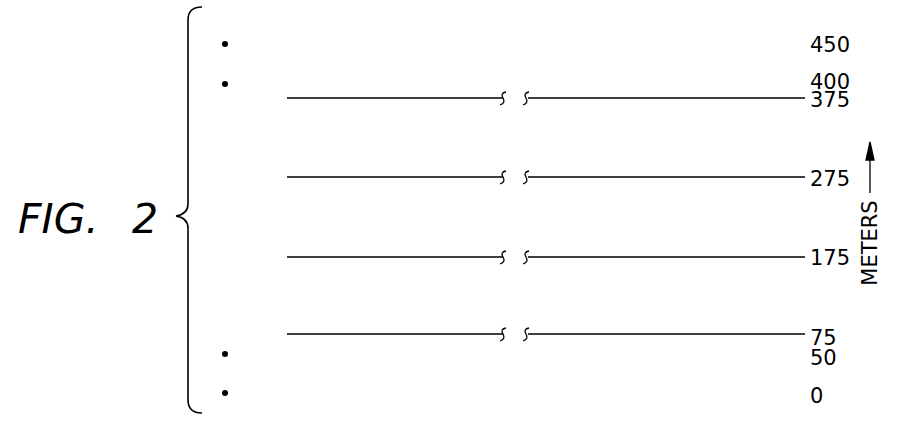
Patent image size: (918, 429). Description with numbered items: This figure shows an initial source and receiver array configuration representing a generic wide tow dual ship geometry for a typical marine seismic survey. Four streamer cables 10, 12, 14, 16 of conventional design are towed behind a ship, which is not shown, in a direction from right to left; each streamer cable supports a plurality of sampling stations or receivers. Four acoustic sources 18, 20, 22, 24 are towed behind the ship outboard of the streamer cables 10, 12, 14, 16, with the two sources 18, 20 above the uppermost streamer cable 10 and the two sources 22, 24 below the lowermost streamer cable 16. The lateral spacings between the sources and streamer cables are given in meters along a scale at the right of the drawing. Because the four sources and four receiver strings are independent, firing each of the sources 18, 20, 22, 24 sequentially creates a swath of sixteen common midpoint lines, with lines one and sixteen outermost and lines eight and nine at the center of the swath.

The streamer cable 10 is at (573, 98).
The streamer cable 12 is at (573, 177).
The streamer cable 14 is at (573, 257).
The streamer cable 16 is at (573, 334).
The acoustic source 18 is at (225, 44).
The acoustic source 20 is at (225, 84).
The acoustic source 22 is at (225, 354).
The acoustic source 24 is at (225, 393).